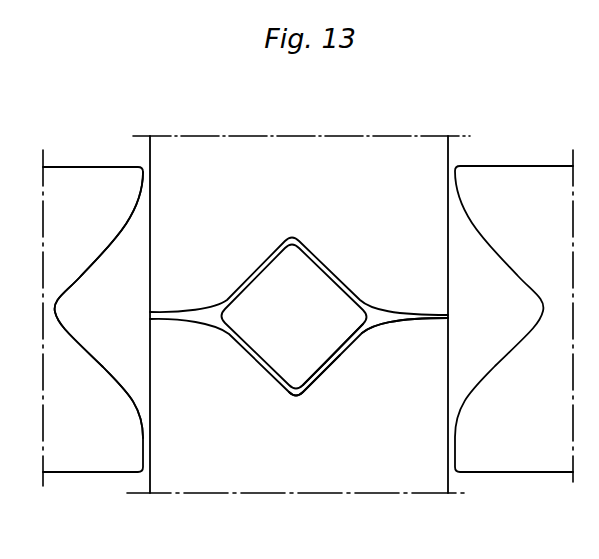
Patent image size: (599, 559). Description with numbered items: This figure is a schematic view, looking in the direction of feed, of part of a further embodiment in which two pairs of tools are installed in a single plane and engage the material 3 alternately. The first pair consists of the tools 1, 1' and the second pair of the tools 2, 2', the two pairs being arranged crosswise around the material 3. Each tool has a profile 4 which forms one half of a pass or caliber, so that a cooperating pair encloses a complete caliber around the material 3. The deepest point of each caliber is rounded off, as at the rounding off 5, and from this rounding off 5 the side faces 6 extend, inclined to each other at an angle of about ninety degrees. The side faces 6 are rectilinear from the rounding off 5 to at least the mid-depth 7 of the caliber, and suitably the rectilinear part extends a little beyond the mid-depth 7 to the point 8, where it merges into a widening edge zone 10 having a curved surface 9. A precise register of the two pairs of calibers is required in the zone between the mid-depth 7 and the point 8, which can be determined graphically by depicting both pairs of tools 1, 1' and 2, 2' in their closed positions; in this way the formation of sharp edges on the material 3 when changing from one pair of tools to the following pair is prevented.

The tool 1 is at (301, 124).
The tool 1' is at (297, 512).
The tool 2 is at (74, 318).
The tool 2' is at (514, 337).
The material 3 is at (277, 352).
The profile 4 is at (87, 323).
The rounding off 5 is at (297, 403).
The side faces 6 is at (318, 387).
The mid-depth 7 is at (340, 365).
The point 8 is at (348, 348).
The curved surface 9 is at (363, 343).
The widening edge zone 10 is at (440, 310).